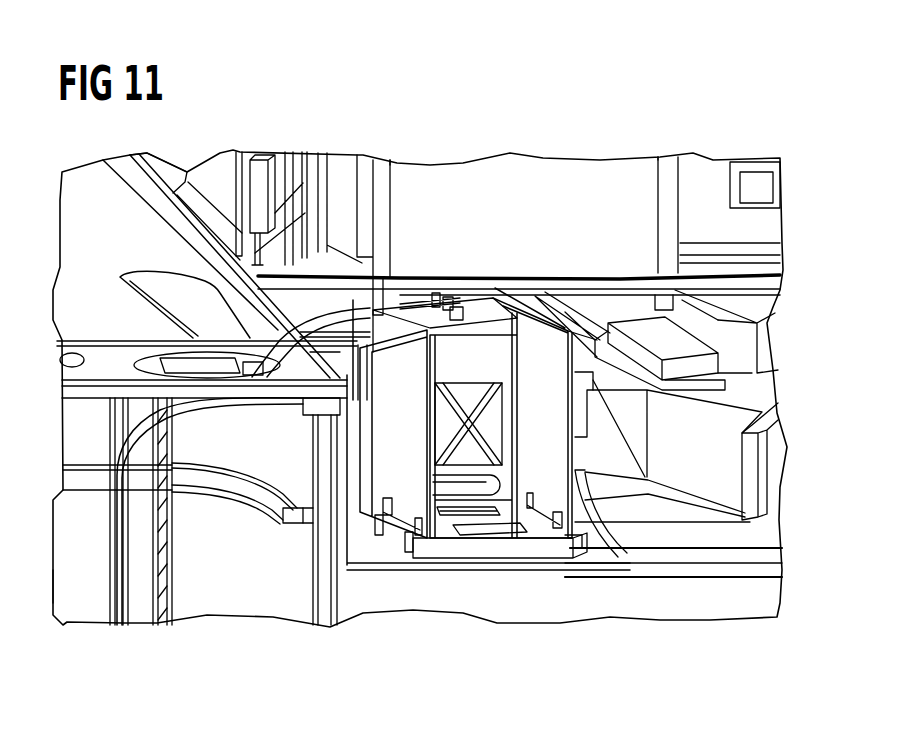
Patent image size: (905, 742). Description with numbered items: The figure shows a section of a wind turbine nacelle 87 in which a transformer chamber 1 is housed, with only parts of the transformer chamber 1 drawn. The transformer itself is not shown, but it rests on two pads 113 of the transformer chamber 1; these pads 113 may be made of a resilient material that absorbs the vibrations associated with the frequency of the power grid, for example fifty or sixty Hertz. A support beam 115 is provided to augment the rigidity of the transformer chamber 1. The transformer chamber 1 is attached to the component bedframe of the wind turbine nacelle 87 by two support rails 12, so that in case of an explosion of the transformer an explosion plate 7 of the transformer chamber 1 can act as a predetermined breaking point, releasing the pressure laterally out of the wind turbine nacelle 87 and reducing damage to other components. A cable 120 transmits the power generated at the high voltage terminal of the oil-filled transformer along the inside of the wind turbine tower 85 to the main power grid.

The transformer chamber 1 is at (420, 583).
The explosion plate 7 is at (488, 416).
The support rails 12 is at (401, 372).
The wind turbine tower 85 is at (93, 603).
The wind turbine nacelle 87 is at (692, 141).
The pads 113 is at (443, 515).
The support beam 115 is at (560, 543).
The cable 120 is at (117, 513).